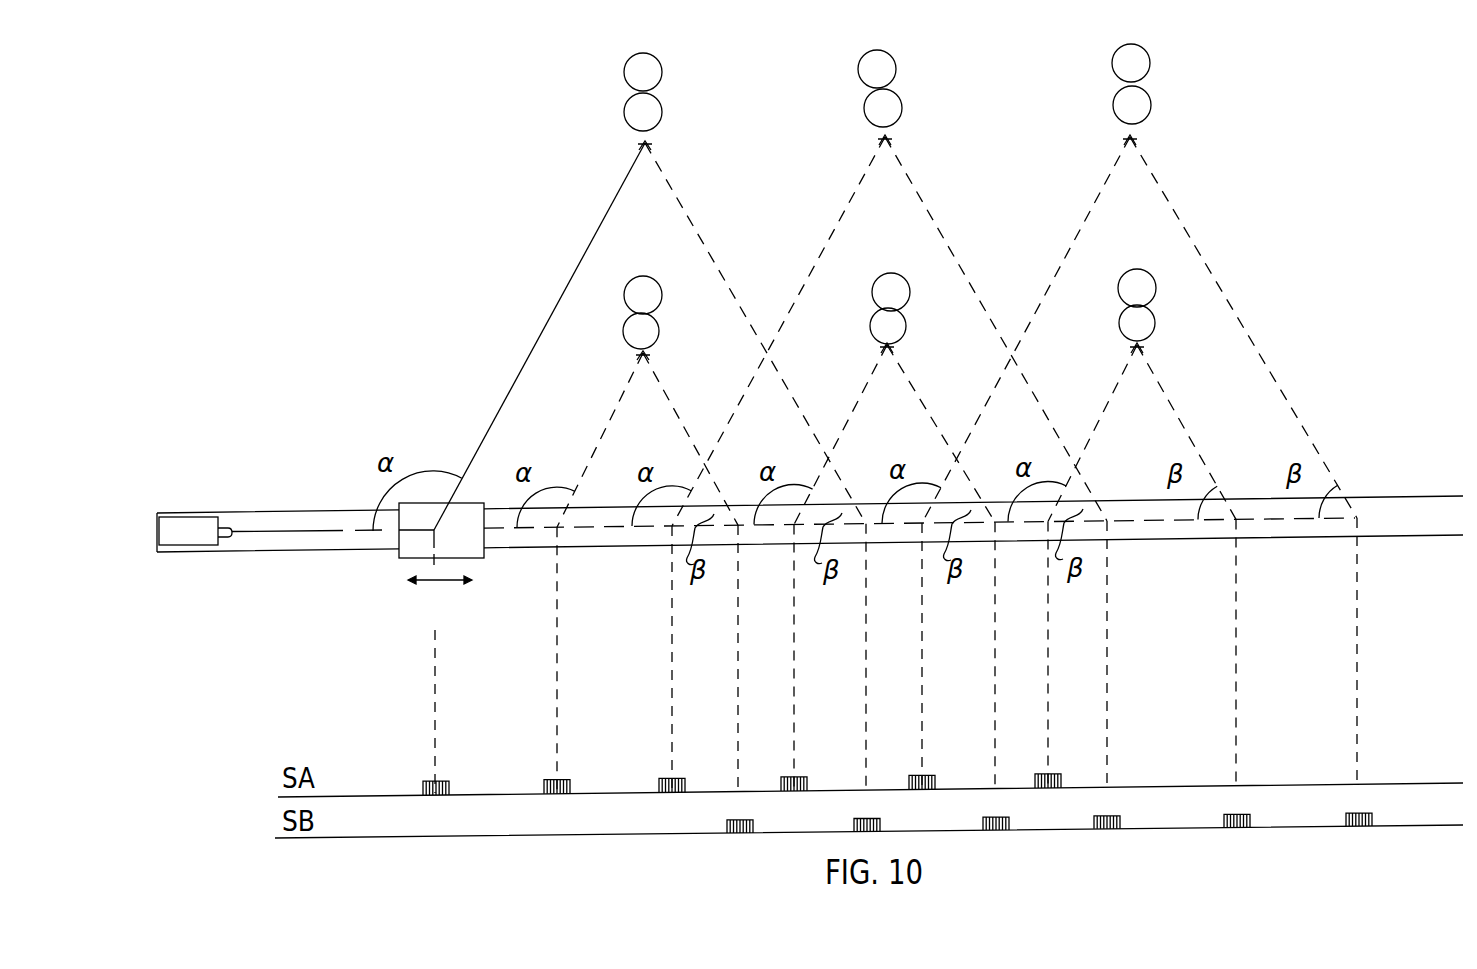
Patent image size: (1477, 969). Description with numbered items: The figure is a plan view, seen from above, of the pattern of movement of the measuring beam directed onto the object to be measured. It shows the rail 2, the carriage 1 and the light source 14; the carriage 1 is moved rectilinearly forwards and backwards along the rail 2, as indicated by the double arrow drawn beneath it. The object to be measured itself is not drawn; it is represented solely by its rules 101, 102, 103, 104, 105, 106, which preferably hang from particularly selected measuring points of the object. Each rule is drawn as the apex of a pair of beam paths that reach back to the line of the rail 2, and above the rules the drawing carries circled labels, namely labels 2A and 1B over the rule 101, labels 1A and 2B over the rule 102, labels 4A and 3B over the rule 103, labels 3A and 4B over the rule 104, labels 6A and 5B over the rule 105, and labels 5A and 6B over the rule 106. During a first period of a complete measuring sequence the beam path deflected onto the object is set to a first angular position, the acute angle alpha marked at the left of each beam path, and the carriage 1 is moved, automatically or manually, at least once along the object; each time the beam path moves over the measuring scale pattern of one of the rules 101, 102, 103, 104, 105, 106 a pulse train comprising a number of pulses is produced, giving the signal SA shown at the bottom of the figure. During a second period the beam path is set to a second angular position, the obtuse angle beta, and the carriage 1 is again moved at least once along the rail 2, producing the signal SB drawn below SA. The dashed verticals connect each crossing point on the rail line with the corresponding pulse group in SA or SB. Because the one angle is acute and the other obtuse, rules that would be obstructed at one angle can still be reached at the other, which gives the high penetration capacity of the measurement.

The carriage 1 is at (478, 549).
The rail 2 is at (1393, 534).
The light source 14 is at (190, 548).
The rule 101 is at (647, 534).
The rule 102 is at (650, 420).
The rule 103 is at (894, 531).
The rule 104 is at (889, 420).
The rule 105 is at (1142, 527).
The rule 106 is at (1139, 416).
The sensor position marker 1A is at (643, 72).
The sensor position marker 1B is at (638, 355).
The sensor position marker 2A is at (643, 295).
The sensor position marker 2B is at (635, 142).
The sensor position marker 3A is at (877, 69).
The sensor position marker 3B is at (882, 354).
The sensor position marker 4A is at (891, 292).
The sensor position marker 4B is at (878, 141).
The sensor position marker 5A is at (1131, 63).
The sensor position marker 5B is at (1130, 350).
The sensor position marker 6A is at (1137, 288).
The sensor position marker 6B is at (1125, 137).